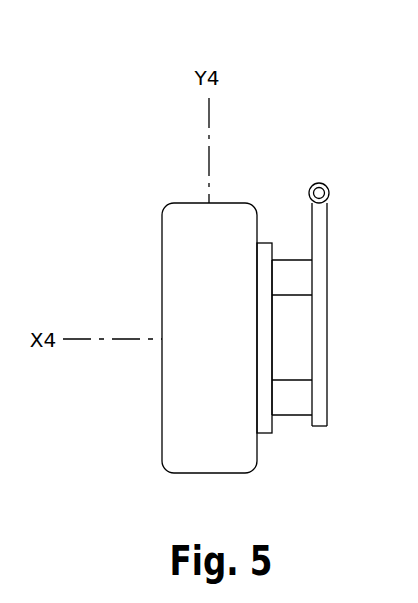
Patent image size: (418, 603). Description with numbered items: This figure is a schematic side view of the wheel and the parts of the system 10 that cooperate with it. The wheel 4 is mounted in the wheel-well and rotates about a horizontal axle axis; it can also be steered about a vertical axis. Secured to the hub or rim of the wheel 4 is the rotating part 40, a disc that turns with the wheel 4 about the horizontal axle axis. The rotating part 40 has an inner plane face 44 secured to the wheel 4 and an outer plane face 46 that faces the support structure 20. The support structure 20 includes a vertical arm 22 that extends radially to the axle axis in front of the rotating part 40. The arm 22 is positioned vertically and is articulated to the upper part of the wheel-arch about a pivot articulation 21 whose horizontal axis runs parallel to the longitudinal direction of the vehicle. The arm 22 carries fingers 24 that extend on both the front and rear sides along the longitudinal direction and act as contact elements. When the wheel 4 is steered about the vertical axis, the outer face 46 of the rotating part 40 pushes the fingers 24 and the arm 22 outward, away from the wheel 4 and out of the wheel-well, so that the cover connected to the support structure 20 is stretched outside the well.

The wheel 4 is at (187, 223).
The system 10 is at (303, 153).
The support structure 20 is at (344, 395).
The pivot articulation 21 is at (318, 183).
The vertical arm 22 is at (318, 245).
The fingers 24 is at (290, 275).
The rotating part 40 is at (265, 430).
The inner plane face 44 is at (253, 337).
The outer plane face 46 is at (275, 348).